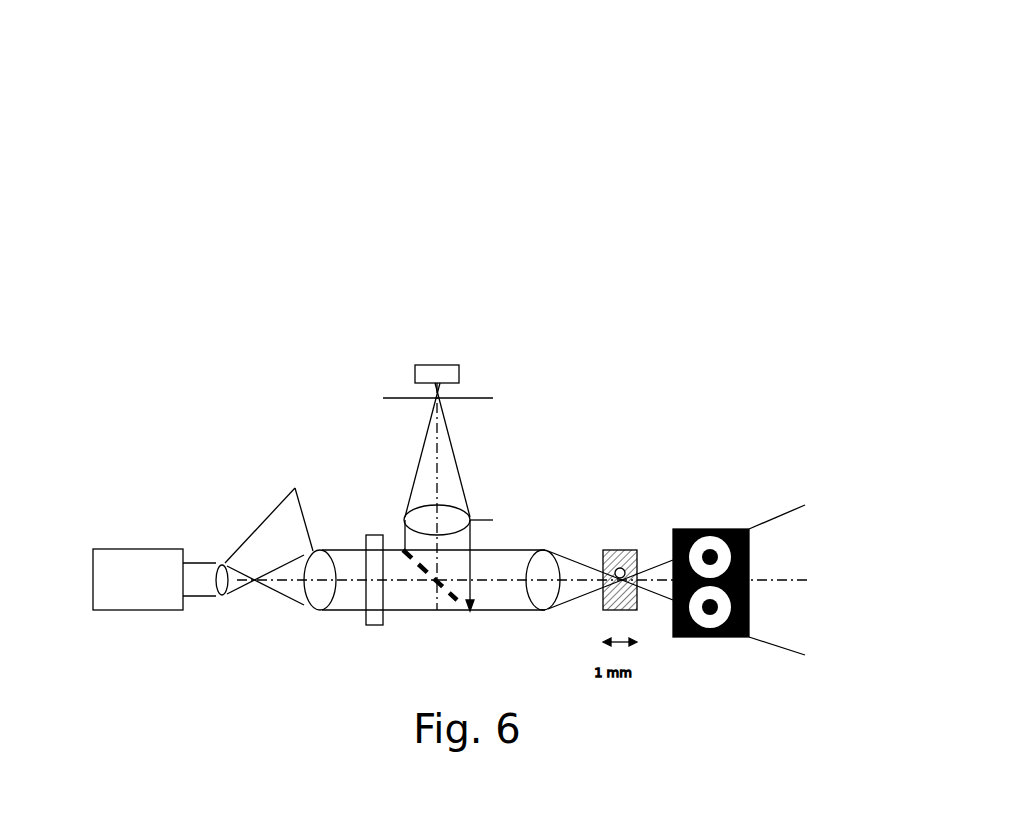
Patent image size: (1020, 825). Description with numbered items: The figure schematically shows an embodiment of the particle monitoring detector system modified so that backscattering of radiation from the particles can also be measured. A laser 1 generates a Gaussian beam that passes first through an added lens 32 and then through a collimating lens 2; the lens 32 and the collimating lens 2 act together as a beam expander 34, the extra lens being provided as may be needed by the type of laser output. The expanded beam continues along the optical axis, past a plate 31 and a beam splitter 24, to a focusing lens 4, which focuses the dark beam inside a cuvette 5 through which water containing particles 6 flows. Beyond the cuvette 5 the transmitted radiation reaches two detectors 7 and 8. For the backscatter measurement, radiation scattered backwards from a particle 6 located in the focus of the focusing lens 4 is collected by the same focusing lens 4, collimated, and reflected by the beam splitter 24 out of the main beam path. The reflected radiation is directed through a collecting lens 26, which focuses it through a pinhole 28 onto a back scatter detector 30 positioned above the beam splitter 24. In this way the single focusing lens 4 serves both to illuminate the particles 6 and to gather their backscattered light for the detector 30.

The laser 1 is at (135, 598).
The lens 32 is at (223, 597).
The collimating lens 2 is at (315, 608).
The beam expander 34 is at (269, 508).
The filter plate 31 is at (304, 490).
The beam splitter 24 is at (341, 433).
The collecting lens 26 is at (363, 354).
The pinhole 28 is at (359, 244).
The back scatter detector 30 is at (358, 212).
The focusing lens 4 is at (607, 323).
The cuvette 5 is at (646, 370).
The particle 6 is at (666, 393).
The detector 7 is at (749, 560).
The detector 8 is at (749, 598).